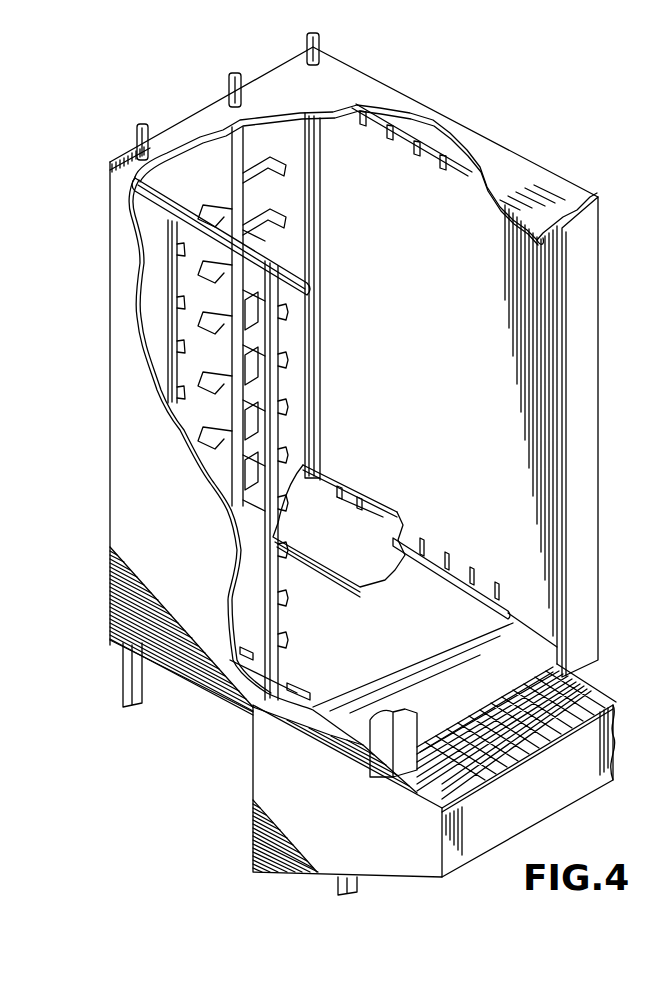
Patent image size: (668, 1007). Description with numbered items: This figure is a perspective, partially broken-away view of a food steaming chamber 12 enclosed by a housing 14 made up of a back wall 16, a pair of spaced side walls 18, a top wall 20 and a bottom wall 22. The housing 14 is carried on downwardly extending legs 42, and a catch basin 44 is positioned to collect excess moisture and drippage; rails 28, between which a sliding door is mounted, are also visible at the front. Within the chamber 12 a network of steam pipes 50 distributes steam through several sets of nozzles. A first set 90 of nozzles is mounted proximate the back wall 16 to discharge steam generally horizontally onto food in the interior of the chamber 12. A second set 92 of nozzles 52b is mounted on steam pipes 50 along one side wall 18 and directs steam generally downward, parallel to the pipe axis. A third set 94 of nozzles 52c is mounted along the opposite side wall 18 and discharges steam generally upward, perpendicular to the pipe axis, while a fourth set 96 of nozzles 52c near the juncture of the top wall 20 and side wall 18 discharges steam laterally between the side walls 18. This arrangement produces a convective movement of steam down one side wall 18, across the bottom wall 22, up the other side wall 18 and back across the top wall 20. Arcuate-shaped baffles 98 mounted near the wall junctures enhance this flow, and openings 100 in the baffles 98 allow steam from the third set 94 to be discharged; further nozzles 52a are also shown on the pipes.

The food steaming chamber 12 is at (490, 388).
The housing 14 is at (440, 122).
The back wall 16 is at (205, 163).
The side walls 18 is at (184, 513).
The top wall 20 is at (366, 88).
The bottom wall 22 is at (400, 640).
The rails 28 is at (596, 314).
The legs 42 is at (348, 874).
The catch basin 44 is at (566, 788).
The steam pipes 50 is at (158, 283).
The hooks 52a is at (228, 340).
The nozzles 52b is at (267, 400).
The nozzles 52c is at (462, 520).
The first set of nozzles 90 is at (298, 250).
The second set of nozzles 92 is at (285, 565).
The third set of nozzles 94 is at (440, 585).
The fourth set of nozzles 96 is at (398, 143).
The arcuate-shaped baffles 98 is at (370, 529).
The openings 100 is at (340, 487).